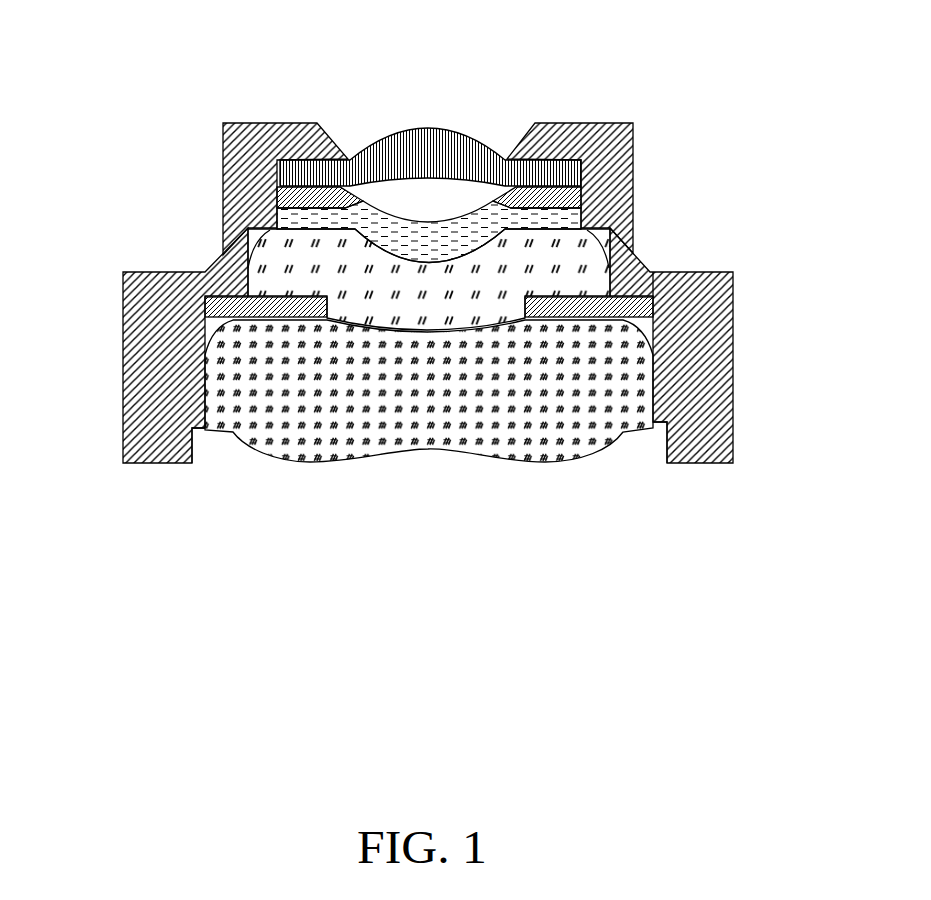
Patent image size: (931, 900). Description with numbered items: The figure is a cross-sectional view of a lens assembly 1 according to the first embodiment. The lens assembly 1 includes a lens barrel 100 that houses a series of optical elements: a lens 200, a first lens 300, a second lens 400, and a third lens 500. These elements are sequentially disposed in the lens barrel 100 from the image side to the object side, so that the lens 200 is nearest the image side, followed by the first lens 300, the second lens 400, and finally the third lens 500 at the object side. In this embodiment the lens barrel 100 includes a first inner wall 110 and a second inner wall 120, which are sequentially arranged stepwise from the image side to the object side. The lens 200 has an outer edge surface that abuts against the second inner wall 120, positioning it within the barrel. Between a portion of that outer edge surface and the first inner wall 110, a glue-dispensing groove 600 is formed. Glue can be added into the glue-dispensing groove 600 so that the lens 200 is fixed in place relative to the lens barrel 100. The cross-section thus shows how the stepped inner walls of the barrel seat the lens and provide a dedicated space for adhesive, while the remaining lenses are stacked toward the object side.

The lens assembly 1 is at (416, 53).
The lens barrel 100 is at (225, 175).
The first inner wall 110 is at (190, 448).
The second inner wall 120 is at (205, 380).
The lens 200 is at (607, 365).
The first lens 300 is at (577, 275).
The second lens 400 is at (557, 218).
The third lens 500 is at (575, 178).
The glue-dispensing groove 600 is at (657, 427).